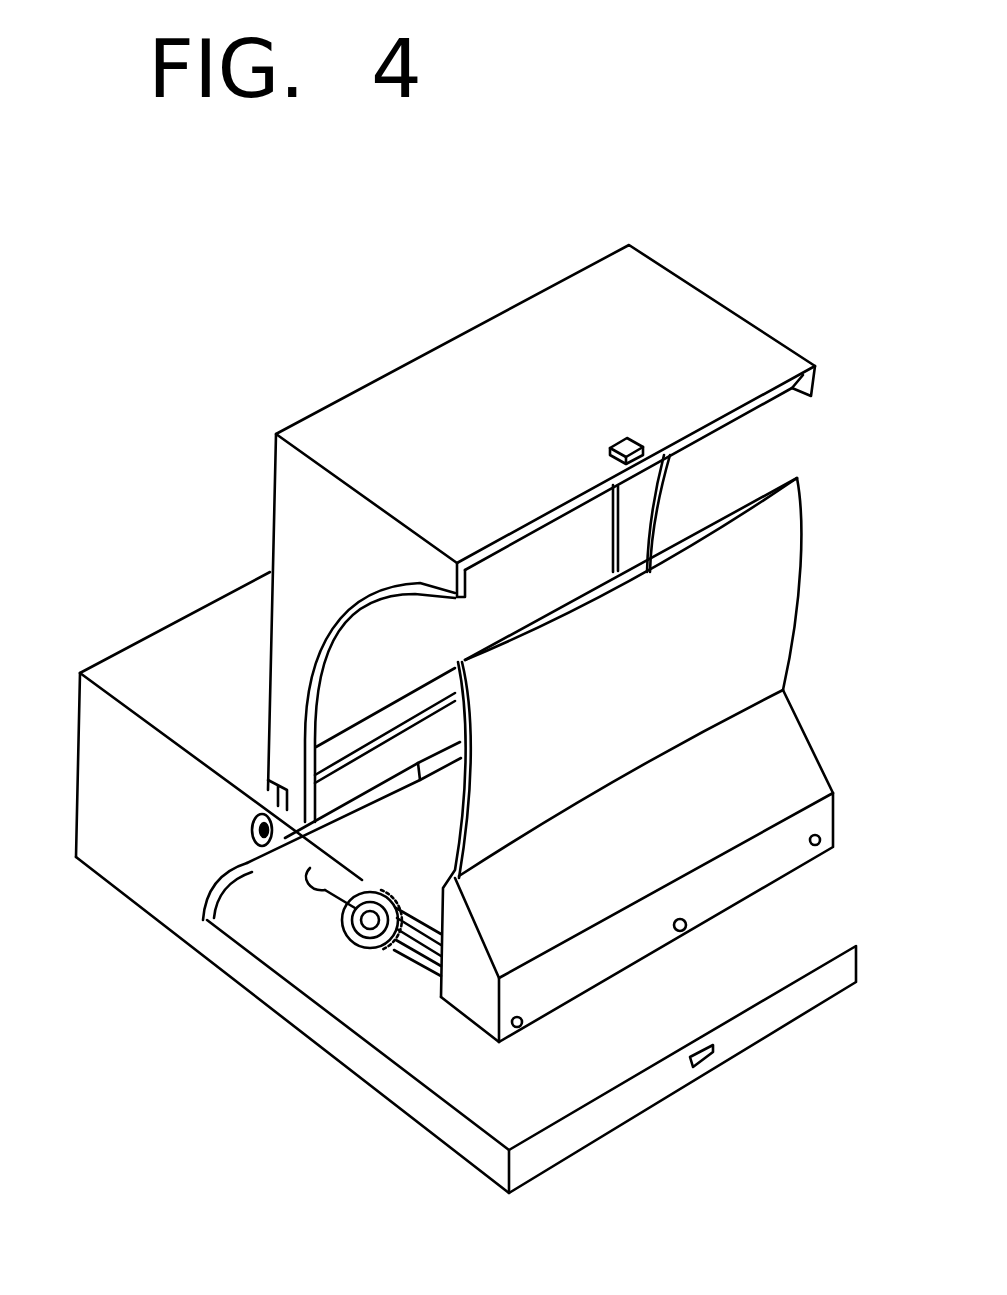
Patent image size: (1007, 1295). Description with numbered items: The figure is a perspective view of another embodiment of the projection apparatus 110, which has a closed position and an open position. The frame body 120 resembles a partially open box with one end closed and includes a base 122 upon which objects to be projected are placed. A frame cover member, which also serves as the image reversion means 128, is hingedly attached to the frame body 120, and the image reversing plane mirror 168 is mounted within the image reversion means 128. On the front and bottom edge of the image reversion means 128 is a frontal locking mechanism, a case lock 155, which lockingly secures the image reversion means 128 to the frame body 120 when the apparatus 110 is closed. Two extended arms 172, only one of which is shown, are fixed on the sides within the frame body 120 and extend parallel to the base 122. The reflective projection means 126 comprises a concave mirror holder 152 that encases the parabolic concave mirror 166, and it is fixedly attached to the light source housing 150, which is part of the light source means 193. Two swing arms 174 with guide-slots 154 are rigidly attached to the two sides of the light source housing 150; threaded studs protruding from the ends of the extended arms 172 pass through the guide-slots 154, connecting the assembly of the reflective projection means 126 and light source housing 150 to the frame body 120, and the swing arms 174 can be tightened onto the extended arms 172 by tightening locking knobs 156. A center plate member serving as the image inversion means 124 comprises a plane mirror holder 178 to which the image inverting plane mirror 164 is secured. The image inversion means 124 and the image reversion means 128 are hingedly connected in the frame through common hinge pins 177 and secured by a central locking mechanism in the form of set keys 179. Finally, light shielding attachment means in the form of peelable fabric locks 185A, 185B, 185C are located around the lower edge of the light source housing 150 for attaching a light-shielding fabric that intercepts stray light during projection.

The apparatus 110 is at (165, 590).
The frame body 120 is at (130, 645).
The base 122 is at (808, 924).
The image inversion means 124 is at (403, 757).
The reflective projection means 126 is at (812, 611).
The image reversion means 128 is at (447, 320).
The light source housing 150 is at (610, 958).
The concave mirror holder 152 is at (795, 480).
The guide-slots 154 is at (425, 953).
The case lock 155 is at (634, 440).
The tightening locking knobs 156 is at (348, 930).
The image inverting plane mirror 164 is at (400, 787).
The parabolic concave mirror 166 is at (452, 834).
The image reversing plane mirror 168 is at (550, 603).
The extended arms 172 is at (328, 880).
The swing arms 174 is at (430, 972).
The common hinge pins 177 is at (300, 866).
The plane mirror holder 178 is at (310, 815).
The set keys 179 is at (252, 829).
The peelable fabric lock 185A is at (524, 1028).
The peelable fabric lock 185B is at (686, 930).
The peelable fabric lock 185C is at (822, 838).
The light source means 193 is at (820, 731).